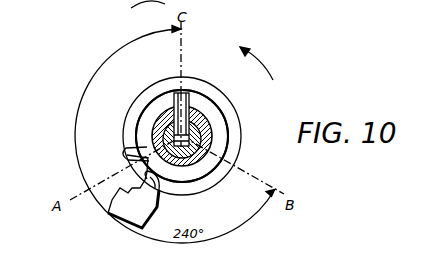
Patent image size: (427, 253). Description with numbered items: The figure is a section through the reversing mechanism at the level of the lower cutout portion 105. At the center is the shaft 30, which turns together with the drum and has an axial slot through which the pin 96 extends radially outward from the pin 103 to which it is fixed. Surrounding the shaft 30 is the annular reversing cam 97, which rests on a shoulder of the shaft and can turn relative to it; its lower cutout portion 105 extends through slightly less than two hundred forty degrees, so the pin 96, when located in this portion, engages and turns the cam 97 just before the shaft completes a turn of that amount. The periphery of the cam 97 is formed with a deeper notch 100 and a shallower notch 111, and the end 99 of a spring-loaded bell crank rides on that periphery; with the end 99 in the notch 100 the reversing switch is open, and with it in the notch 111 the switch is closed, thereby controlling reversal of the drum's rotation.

The annular reversing cam 97 is at (160, 80).
The pin 96 is at (176, 98).
The lower cutout portion 105 is at (145, 122).
The notch 100 is at (125, 150).
The notch 111 is at (148, 157).
The end of bell crank 99 is at (156, 201).
The shaft 30 is at (198, 180).
The pin 103 is at (188, 142).